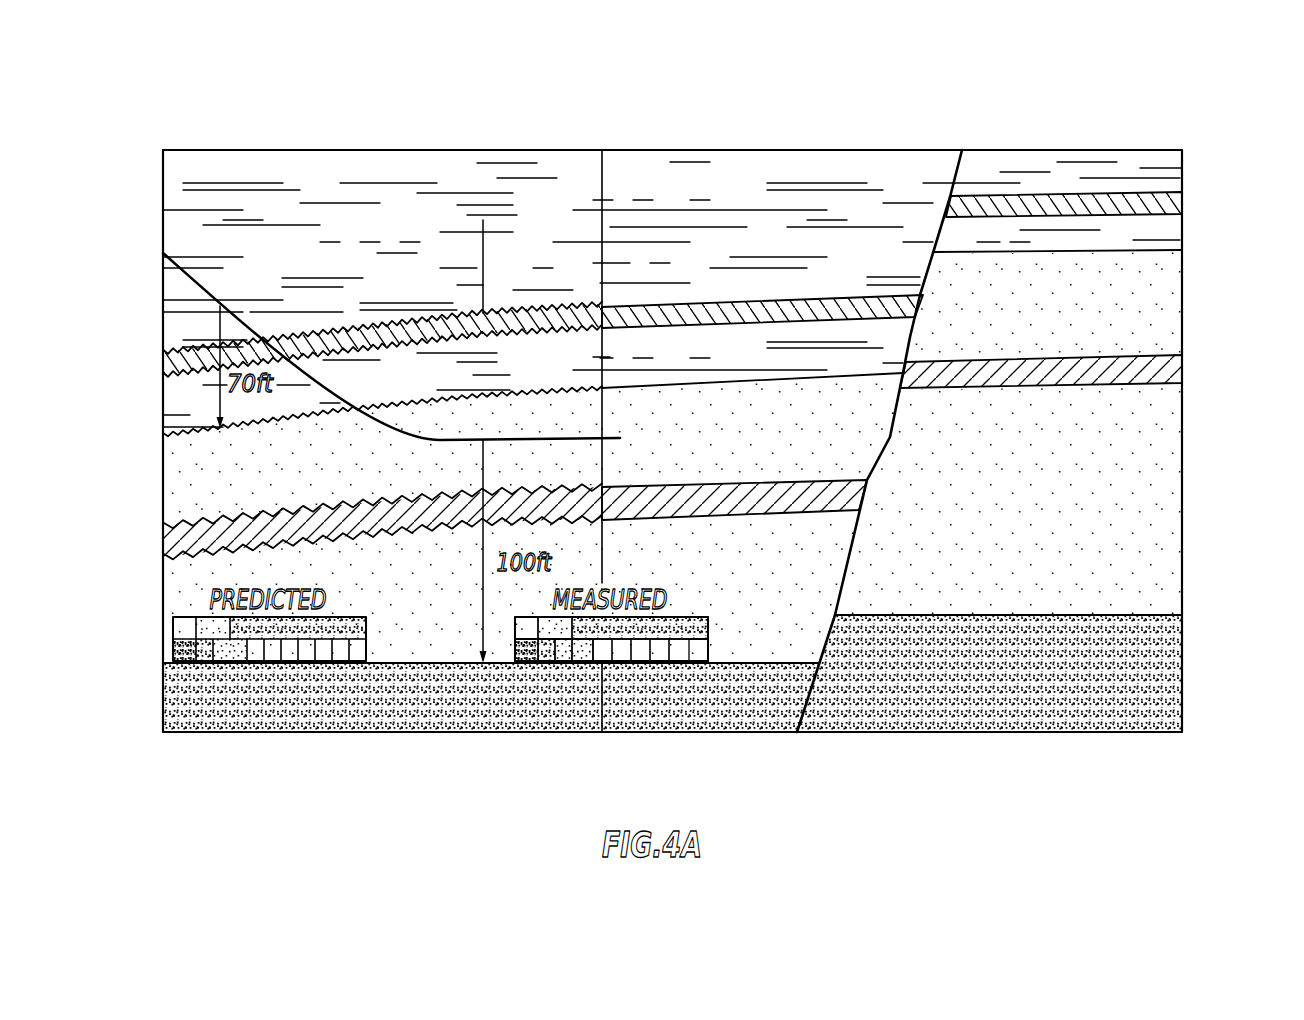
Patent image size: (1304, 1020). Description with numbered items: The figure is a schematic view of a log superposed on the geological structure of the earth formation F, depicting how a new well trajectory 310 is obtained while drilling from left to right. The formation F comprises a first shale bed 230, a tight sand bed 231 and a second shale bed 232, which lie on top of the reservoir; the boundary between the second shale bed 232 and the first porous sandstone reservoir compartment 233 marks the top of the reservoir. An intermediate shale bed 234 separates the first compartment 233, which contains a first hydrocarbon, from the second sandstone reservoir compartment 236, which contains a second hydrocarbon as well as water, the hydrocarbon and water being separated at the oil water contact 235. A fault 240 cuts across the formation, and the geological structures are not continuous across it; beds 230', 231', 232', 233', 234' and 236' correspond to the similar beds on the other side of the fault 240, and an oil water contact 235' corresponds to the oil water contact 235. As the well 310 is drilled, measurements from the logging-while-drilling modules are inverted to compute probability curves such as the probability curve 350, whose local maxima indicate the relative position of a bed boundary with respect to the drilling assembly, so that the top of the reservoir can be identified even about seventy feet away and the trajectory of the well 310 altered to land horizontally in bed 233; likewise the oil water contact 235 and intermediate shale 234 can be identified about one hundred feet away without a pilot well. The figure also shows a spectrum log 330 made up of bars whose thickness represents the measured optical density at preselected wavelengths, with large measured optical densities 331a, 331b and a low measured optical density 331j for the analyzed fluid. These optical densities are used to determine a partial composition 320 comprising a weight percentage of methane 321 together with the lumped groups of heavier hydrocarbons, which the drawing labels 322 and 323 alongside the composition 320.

The first shale deposit or bed 230 is at (501, 294).
The tight sand deposit or bed 231 is at (485, 336).
The second shale deposit or bed 232 is at (475, 404).
The first porous sandstone bed or reservoir compartment 233 is at (476, 449).
The intermediate shale bed 234 is at (458, 519).
The oil water contact 235 is at (491, 721).
The second sandstone bed or reservoir compartment 236 is at (454, 586).
The first shale bed across the fault 230' is at (1126, 167).
The tight sand bed across the fault 231' is at (1123, 199).
The second shale bed across the fault 232' is at (1117, 232).
The first reservoir compartment across the fault 233' is at (1103, 306).
The intermediate shale bed across the fault 234' is at (1100, 353).
The oil water contact across the fault 235' is at (1047, 671).
The second reservoir compartment across the fault 236' is at (1066, 499).
The fault 240 is at (843, 590).
The well 310 is at (198, 283).
The probability curve 350 is at (483, 220).
The partial composition 320 is at (604, 660).
The weight percentage of methane 321 is at (545, 622).
The second log cell 322 is at (545, 630).
The third log cell 323 is at (683, 630).
The spectrum log 330 is at (607, 709).
The measured optical density 331a is at (526, 661).
The measured optical density 331b is at (546, 661).
The measured optical density 331j is at (699, 648).
The earth formation F is at (1140, 108).